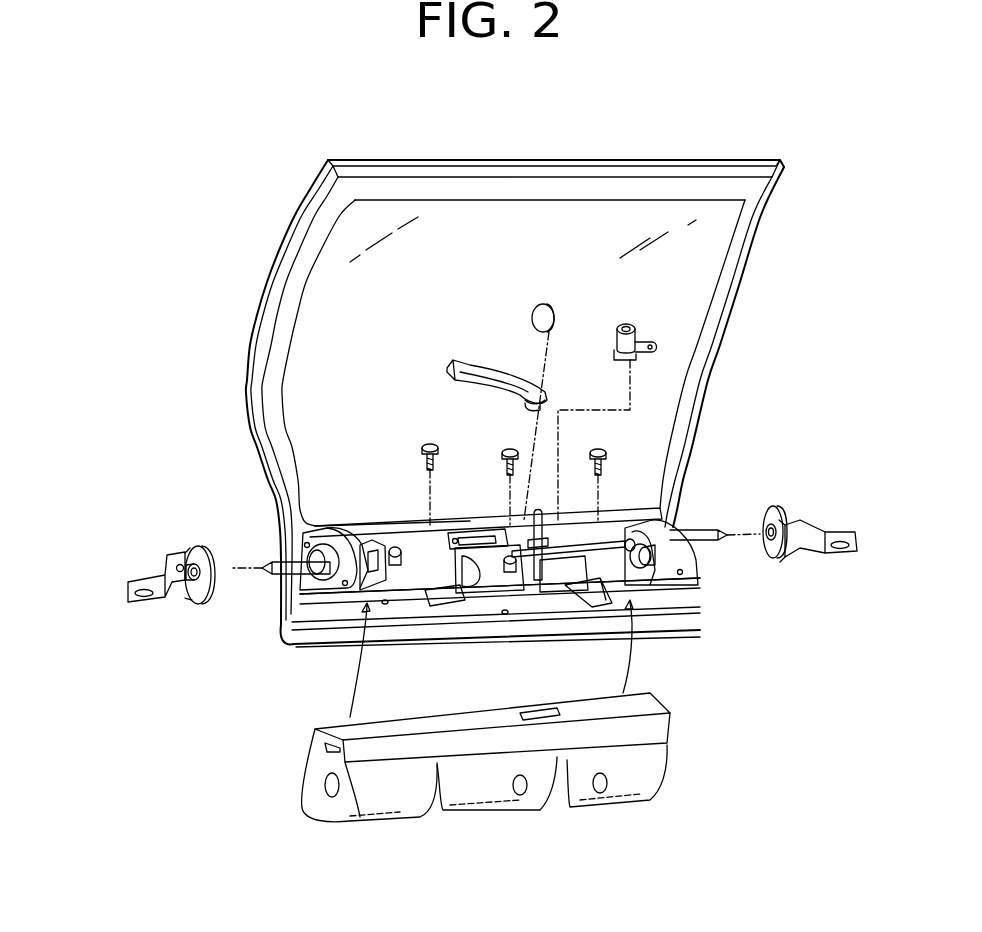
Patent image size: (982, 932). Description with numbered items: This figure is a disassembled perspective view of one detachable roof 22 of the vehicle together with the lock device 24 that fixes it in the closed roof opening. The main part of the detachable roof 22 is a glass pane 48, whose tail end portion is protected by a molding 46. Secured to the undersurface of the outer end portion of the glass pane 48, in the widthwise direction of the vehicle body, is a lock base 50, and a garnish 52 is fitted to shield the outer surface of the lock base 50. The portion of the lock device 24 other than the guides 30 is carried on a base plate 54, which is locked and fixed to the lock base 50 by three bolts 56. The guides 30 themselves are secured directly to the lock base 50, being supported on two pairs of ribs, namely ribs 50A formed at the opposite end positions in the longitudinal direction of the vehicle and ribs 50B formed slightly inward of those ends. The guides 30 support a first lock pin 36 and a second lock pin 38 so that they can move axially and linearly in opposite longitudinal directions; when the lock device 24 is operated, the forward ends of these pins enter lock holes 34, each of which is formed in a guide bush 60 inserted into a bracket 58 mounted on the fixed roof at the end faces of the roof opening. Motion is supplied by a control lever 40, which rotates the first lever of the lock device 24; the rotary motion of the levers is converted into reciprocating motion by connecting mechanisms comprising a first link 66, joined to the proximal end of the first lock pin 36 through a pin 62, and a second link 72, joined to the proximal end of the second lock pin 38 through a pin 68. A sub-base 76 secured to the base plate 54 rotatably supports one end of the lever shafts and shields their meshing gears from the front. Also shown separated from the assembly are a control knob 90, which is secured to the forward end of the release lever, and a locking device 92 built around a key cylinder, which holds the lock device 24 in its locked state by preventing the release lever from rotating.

The detachable roof 22 is at (240, 388).
The lock device 24 is at (473, 520).
The guides 30 is at (318, 575).
The lock holes 34 is at (194, 556).
The first lock pin 36 is at (735, 548).
The second lock pin 38 is at (265, 555).
The control lever 40 is at (455, 368).
The molding 46 is at (636, 163).
The glass pane 48 is at (712, 266).
The lock base 50 is at (628, 522).
The ribs 50A is at (312, 532).
The ribs 50B is at (372, 533).
The garnish 52 is at (660, 772).
The base plate 54 is at (549, 592).
The bolts 56 is at (426, 447).
The bracket 58 is at (150, 603).
The guide bush 60 is at (200, 598).
The pin 62 is at (605, 540).
The first link 66 is at (582, 605).
The pin 68 is at (392, 540).
The second link 72 is at (400, 610).
The sub-base 76 is at (468, 595).
The control knob 90 is at (553, 316).
The locking device 92 is at (652, 298).